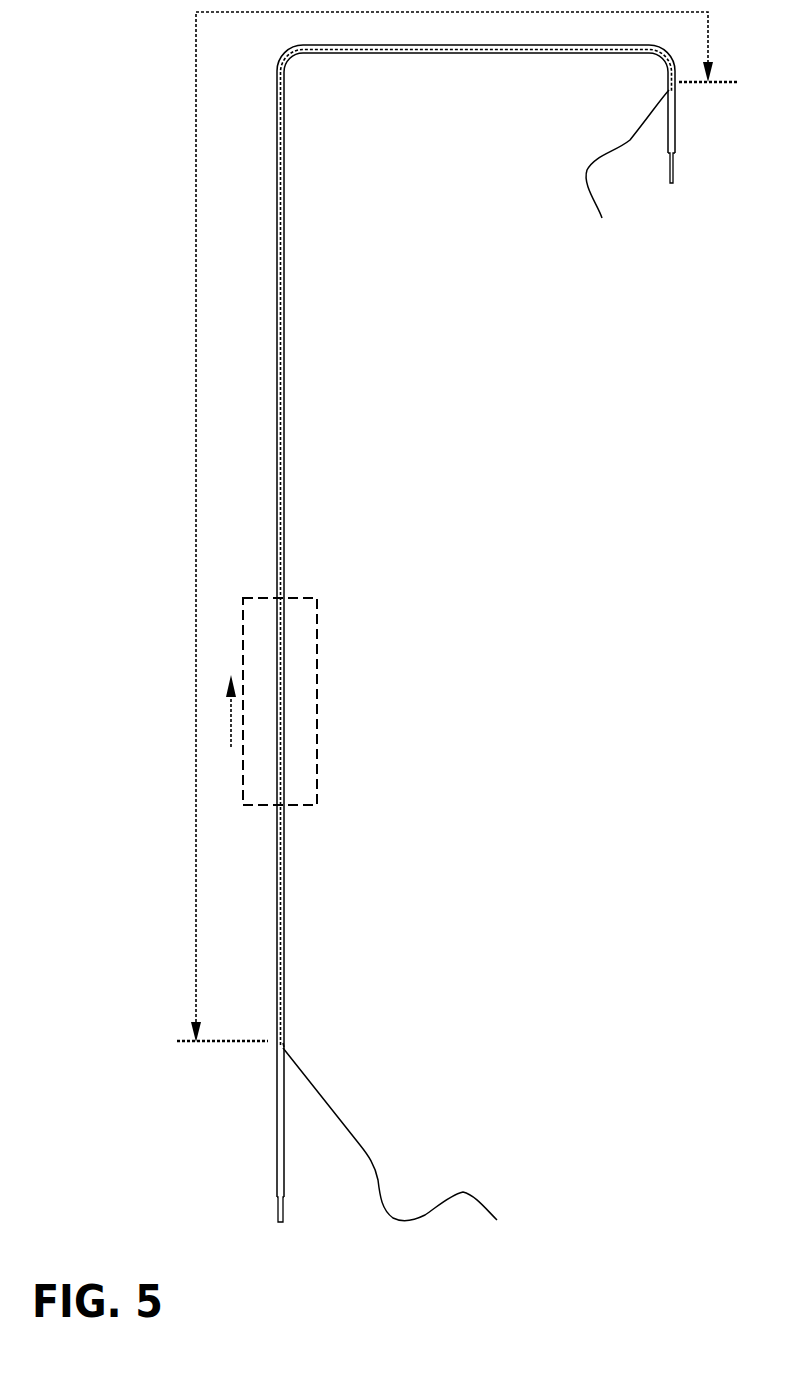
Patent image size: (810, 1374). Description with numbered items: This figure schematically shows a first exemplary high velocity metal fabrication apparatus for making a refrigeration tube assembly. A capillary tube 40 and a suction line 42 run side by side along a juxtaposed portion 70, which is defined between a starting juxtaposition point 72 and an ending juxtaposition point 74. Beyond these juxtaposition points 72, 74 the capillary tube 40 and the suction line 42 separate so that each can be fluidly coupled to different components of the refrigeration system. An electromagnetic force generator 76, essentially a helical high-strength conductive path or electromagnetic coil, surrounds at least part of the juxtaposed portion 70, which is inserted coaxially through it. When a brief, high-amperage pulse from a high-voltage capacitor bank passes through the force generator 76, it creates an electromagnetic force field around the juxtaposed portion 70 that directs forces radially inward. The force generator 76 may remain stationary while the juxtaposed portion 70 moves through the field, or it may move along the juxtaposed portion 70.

The capillary tube 40 is at (335, 1117).
The suction line 42 is at (278, 1132).
The juxtaposed portion 70 is at (195, 336).
The starting juxtaposition point 72 is at (283, 1043).
The ending juxtaposition point 74 is at (669, 90).
The electromagnetic force generator 76 is at (317, 675).